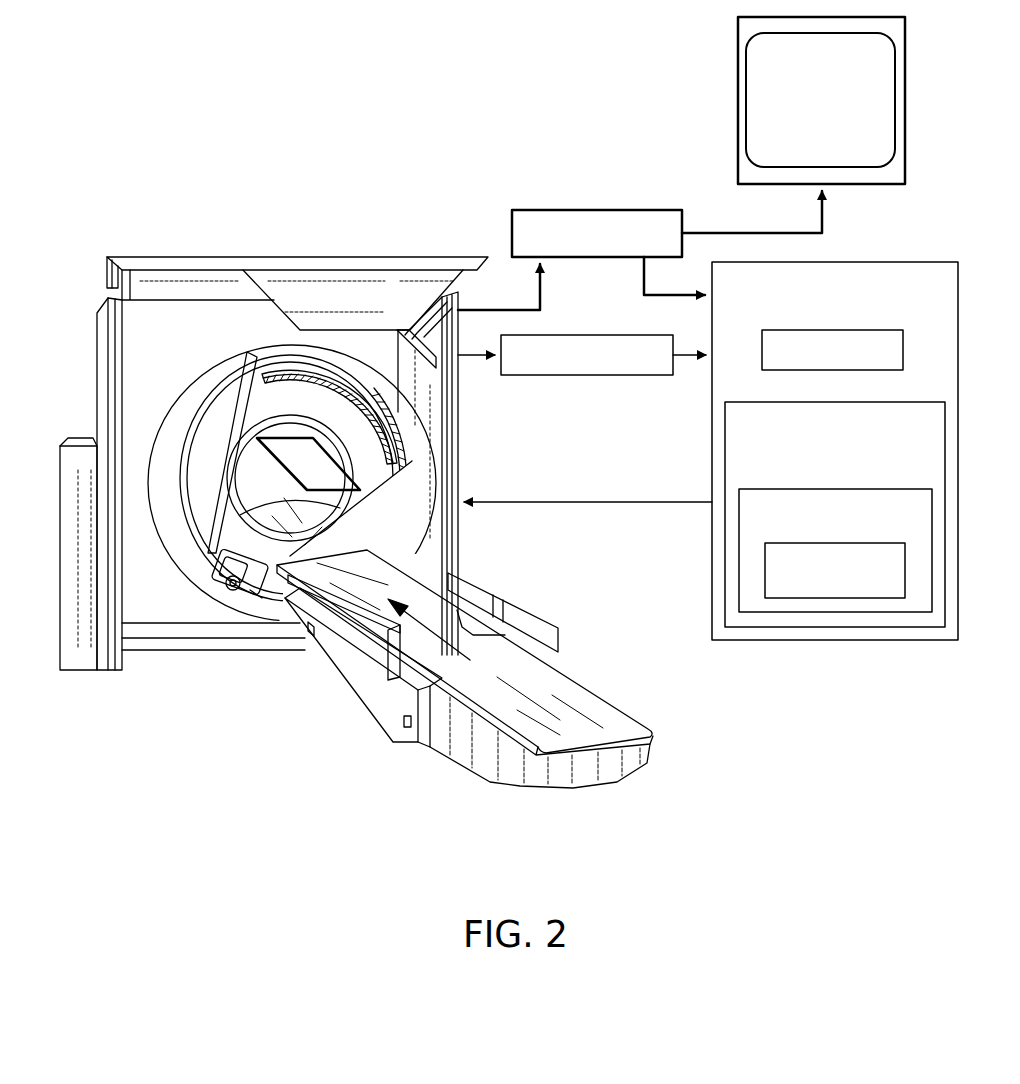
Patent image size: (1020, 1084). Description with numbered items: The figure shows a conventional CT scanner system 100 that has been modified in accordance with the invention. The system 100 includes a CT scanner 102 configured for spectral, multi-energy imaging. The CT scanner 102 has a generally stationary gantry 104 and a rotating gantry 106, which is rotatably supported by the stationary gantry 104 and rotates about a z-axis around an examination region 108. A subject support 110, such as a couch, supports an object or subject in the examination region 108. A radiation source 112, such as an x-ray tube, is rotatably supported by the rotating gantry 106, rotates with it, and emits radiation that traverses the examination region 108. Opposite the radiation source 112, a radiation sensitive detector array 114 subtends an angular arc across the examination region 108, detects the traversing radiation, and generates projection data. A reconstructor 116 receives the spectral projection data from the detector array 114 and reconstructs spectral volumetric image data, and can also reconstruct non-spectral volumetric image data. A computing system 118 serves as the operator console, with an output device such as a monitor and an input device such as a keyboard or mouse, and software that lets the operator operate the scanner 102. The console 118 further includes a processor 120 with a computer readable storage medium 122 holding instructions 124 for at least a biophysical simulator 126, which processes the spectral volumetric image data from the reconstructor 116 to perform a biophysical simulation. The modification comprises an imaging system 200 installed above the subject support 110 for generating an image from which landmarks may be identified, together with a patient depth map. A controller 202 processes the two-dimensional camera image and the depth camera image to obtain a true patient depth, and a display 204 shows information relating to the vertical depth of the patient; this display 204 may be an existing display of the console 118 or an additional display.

The CT scanner system 100 is at (128, 151).
The CT scanner 102 is at (142, 206).
The stationary gantry 104 is at (108, 370).
The rotating gantry 106 is at (257, 403).
The examination region 108 is at (278, 501).
The subject support 110 is at (600, 712).
The radiation source 112 is at (229, 590).
The radiation sensitive detector array 114 is at (380, 418).
The reconstructor 116 is at (588, 335).
The computing system 118 is at (838, 262).
The processor 120 is at (838, 330).
The computer readable storage medium 122 is at (835, 402).
The instructions 124 is at (840, 489).
The biophysical simulator 126 is at (840, 543).
The imaging system 200 is at (360, 481).
The controller 202 is at (596, 210).
The display 204 is at (738, 90).